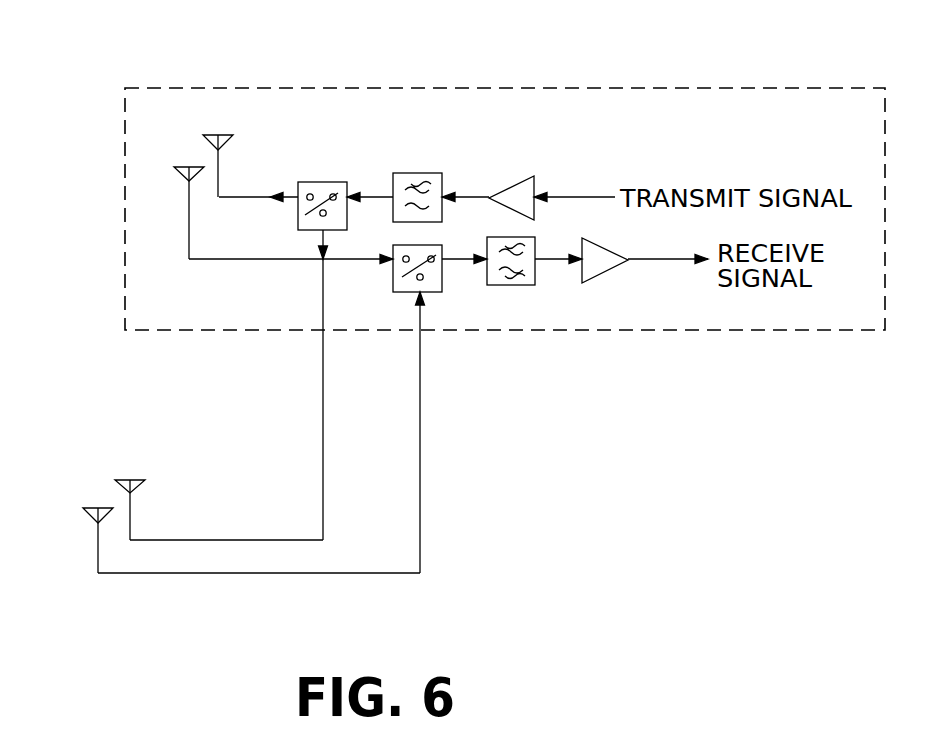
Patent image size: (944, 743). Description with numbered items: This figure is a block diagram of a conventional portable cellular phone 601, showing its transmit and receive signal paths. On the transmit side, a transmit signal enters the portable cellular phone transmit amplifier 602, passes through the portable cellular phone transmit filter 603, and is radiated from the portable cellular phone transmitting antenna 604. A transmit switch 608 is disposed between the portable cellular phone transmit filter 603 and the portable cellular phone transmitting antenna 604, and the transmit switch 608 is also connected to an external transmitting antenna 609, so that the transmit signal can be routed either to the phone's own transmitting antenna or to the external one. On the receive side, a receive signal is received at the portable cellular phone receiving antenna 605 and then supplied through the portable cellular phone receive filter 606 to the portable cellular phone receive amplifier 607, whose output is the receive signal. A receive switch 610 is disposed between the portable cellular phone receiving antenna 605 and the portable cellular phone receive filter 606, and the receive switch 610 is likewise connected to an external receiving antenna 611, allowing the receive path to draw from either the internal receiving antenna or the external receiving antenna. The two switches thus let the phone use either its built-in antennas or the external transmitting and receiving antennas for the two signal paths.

The portable cellular phone 601 is at (150, 86).
The portable cellular phone transmit amplifier 602 is at (528, 176).
The portable cellular phone transmit filter 603 is at (413, 173).
The portable cellular phone transmitting antenna 604 is at (224, 135).
The portable cellular phone receiving antenna 605 is at (181, 176).
The portable cellular phone receive filter 606 is at (525, 285).
The portable cellular phone receive amplifier 607 is at (610, 272).
The transmit switch 608 is at (323, 182).
The external transmitting antenna 609 is at (134, 480).
The receive switch 610 is at (442, 283).
The external receiving antenna 611 is at (92, 508).